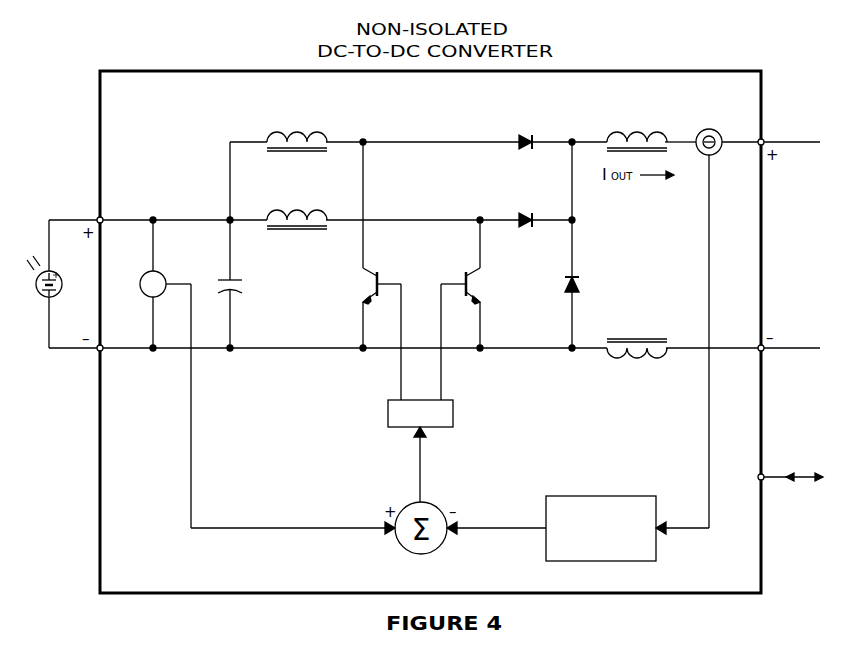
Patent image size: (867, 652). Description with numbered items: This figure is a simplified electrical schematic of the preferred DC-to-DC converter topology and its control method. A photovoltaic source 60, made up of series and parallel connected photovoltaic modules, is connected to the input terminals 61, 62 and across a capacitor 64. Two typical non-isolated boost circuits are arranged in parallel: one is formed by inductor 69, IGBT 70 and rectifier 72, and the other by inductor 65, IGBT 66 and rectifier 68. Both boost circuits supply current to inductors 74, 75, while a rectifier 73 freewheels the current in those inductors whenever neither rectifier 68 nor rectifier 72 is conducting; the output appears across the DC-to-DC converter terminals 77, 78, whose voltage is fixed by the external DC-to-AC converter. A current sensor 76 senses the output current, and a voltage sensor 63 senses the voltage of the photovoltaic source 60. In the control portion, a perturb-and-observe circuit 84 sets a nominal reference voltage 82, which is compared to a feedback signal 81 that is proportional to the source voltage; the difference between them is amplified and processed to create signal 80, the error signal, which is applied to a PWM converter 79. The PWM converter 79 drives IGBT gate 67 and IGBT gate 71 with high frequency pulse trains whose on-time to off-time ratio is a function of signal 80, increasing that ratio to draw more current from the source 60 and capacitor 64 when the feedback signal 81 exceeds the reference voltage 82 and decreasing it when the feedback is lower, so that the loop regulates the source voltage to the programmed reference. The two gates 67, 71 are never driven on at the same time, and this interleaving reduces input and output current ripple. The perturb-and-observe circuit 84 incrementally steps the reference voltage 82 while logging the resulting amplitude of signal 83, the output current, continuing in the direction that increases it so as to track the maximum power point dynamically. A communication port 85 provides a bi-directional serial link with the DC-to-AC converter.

The photovoltaic source 60 is at (36, 297).
The input terminal 61 is at (95, 215).
The input terminal 62 is at (94, 353).
The voltage sensor 63 is at (163, 272).
The capacitor 64 is at (247, 287).
The inductor 65 is at (297, 126).
The IGBT 66 is at (358, 288).
The IGBT gate 67 is at (378, 280).
The rectifier 68 is at (529, 128).
The inductor 69 is at (297, 204).
The IGBT 70 is at (484, 288).
The IGBT gate 71 is at (458, 280).
The rectifier 72 is at (529, 206).
The rectifier 73 is at (564, 287).
The inductor 74 is at (640, 128).
The inductor 75 is at (629, 333).
The current sensor 76 is at (707, 128).
The DC-to-DC converter terminal 77 is at (770, 136).
The DC-to-DC converter terminal 78 is at (769, 355).
The PWM converter 79 is at (457, 395).
The signal 80 is at (432, 435).
The feedback signal 81 is at (374, 535).
The reference voltage 82 is at (467, 535).
The signal 83 is at (675, 537).
The perturb-and-observe circuit 84 is at (602, 490).
The communication port 85 is at (768, 483).